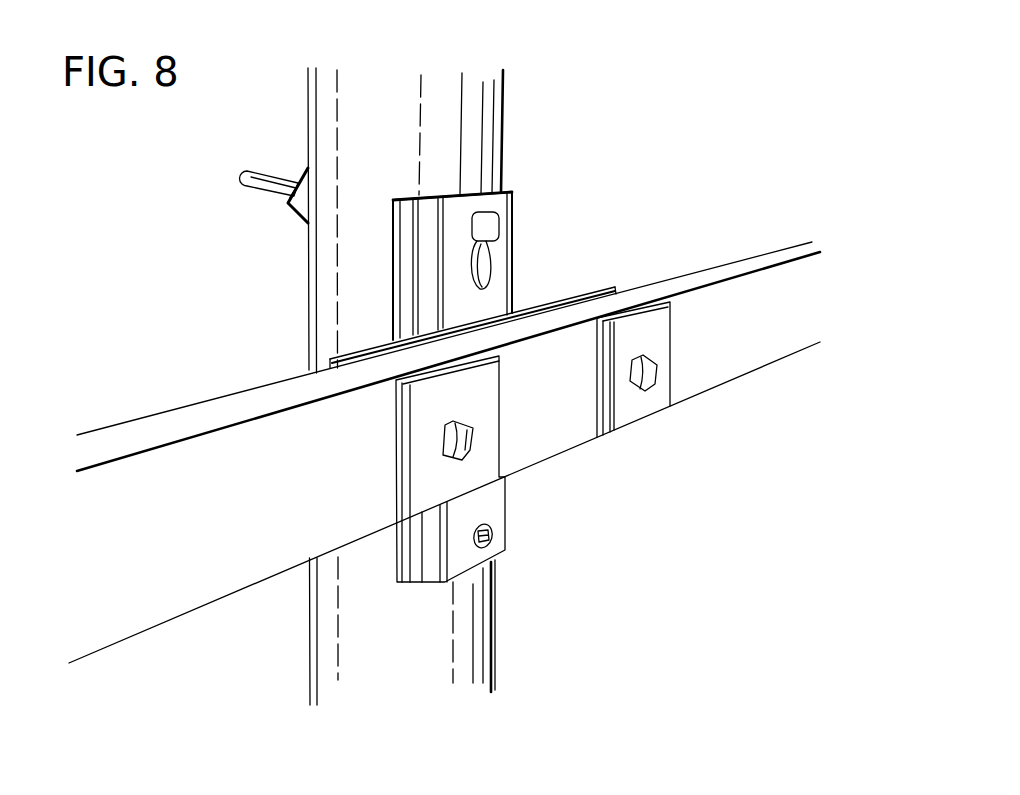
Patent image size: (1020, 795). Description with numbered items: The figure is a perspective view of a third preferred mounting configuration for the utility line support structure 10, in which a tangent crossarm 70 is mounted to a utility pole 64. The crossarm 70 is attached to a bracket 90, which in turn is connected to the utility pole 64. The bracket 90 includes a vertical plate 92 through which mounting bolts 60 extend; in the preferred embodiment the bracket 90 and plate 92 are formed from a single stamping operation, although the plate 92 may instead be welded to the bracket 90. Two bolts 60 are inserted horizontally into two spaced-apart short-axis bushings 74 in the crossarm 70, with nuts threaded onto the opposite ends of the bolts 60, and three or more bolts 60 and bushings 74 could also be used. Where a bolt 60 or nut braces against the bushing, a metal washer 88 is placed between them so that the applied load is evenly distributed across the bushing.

The utility line support structure 10 is at (657, 181).
The utility pole 64 is at (318, 112).
The tangent crossarm 70 is at (230, 377).
The vertical plate 92 is at (570, 297).
The bracket 90 is at (518, 218).
The short-axis bushing 74 is at (421, 527).
The mounting bolt 60 is at (472, 450).
The metal washer 88 is at (460, 492).